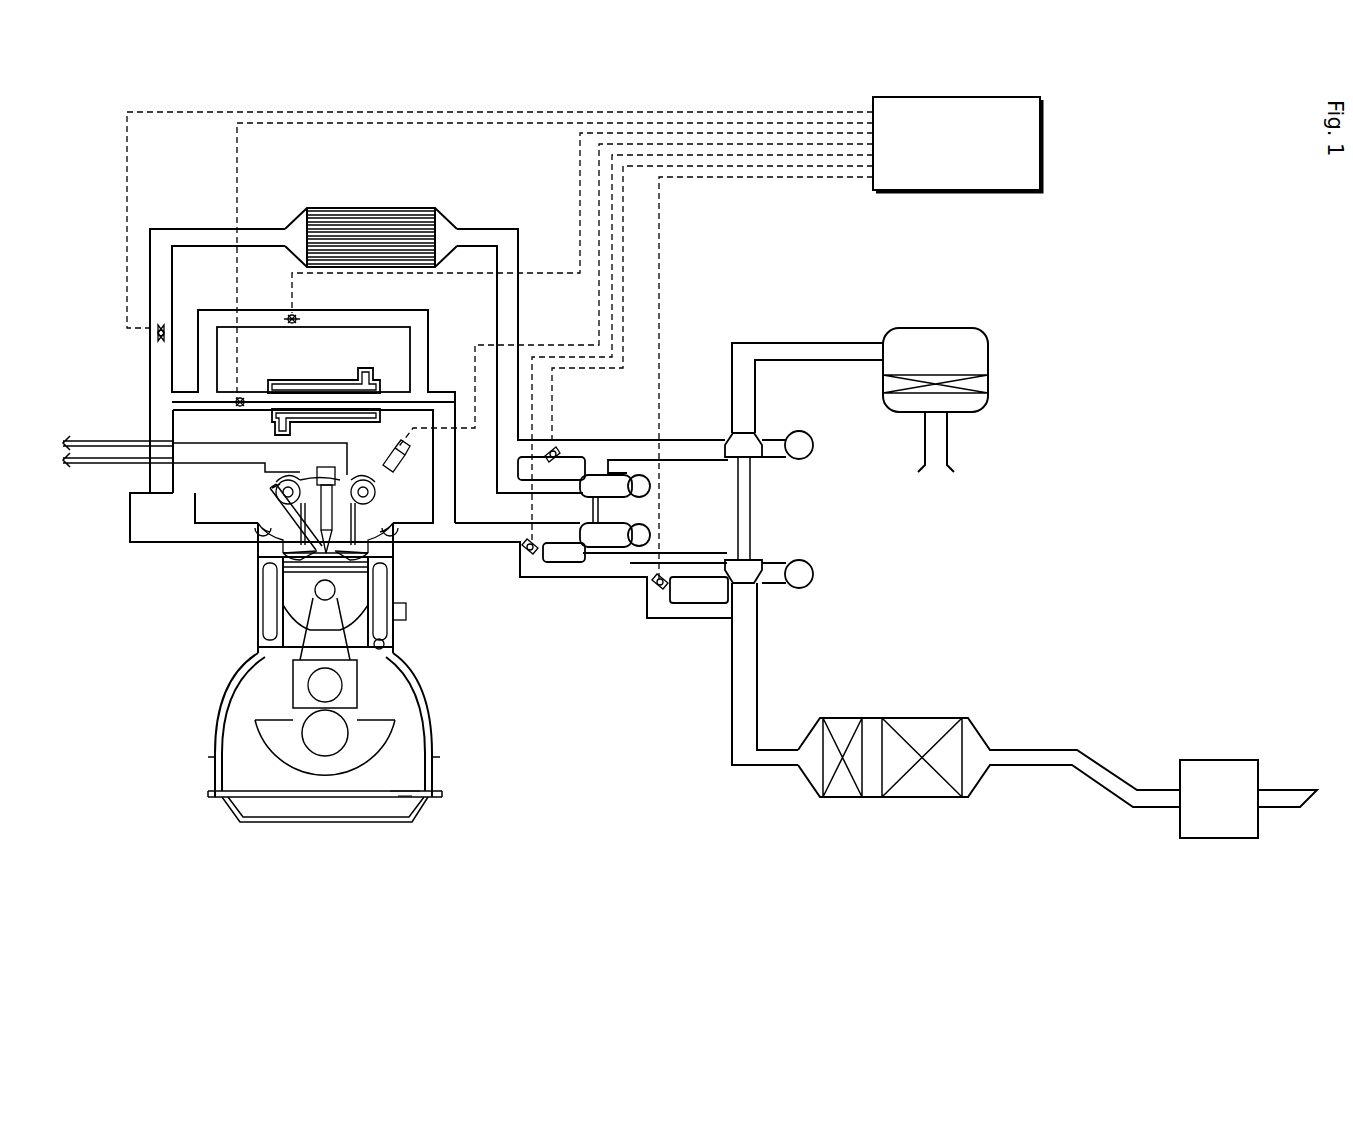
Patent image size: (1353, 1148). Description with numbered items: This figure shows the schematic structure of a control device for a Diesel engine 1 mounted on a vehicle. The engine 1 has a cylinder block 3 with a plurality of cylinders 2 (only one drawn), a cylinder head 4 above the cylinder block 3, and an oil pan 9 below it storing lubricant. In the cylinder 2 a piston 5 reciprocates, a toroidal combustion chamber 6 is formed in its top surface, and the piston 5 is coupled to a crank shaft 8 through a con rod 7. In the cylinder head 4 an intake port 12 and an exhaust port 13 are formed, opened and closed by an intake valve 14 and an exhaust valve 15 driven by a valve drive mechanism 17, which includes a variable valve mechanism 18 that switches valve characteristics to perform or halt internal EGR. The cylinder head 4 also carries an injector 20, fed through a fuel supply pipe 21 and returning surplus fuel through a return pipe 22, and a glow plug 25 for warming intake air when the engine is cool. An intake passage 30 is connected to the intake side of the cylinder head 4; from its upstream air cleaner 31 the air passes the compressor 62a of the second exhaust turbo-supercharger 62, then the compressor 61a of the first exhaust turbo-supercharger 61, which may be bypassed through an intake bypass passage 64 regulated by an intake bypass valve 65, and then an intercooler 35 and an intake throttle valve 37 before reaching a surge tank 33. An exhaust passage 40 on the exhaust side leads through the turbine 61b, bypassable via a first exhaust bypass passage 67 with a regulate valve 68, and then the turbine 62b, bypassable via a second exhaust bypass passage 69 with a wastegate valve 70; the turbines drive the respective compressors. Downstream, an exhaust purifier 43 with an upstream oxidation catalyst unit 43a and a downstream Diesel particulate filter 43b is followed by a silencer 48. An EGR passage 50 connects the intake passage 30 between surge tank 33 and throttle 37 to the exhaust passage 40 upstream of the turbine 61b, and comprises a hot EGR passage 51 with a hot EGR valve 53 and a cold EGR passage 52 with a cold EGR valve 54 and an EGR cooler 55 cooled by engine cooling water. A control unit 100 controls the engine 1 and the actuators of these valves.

The engine 1 is at (212, 598).
The cylinder 2 is at (360, 657).
The cylinder block 3 is at (256, 625).
The cylinder head 4 is at (317, 488).
The piston 5 is at (283, 590).
The combustion chamber 6 is at (350, 565).
The con rod 7 is at (262, 650).
The crank shaft 8 is at (348, 735).
The oil pan 9 is at (315, 825).
The intake port 12 is at (280, 535).
The exhaust port 13 is at (395, 521).
The intake valve 14 is at (282, 548).
The exhaust valve 15 is at (378, 545).
The valve drive mechanism 17 is at (300, 480).
The variable valve mechanism 18 is at (400, 455).
The injector 20 is at (316, 484).
The fuel supply pipe 21 is at (80, 466).
The return pipe 22 is at (80, 440).
The glow plug 25 is at (280, 500).
The intake passage 30 is at (521, 258).
The air cleaner 31 is at (952, 375).
The surge tank 33 is at (150, 544).
The intercooler 35 is at (345, 207).
The intake throttle valve 37 is at (152, 338).
The exhaust passage 40 is at (731, 713).
The exhaust purifier 43 is at (989, 808).
The oxidation catalyst unit 43a is at (842, 797).
The Diesel particulate filter 43b is at (922, 789).
The silencer 48 is at (1219, 760).
The EGR passage 50 is at (313, 360).
The hot EGR passage 51 is at (350, 330).
The cold EGR passage 52 is at (345, 382).
The hot EGR valve 53 is at (300, 316).
The cold EGR valve 54 is at (228, 402).
The EGR cooler 55 is at (268, 413).
The first exhaust turbo-supercharger 61 is at (628, 466).
The compressor of first exhaust turbo-supercharger 61a is at (630, 493).
The turbine of first exhaust turbo-supercharger 61b is at (630, 527).
The second exhaust turbo-supercharger 62 is at (788, 509).
The compressor of second exhaust turbo-supercharger 62a is at (752, 457).
The turbine of second exhaust turbo-supercharger 62b is at (752, 560).
The intake bypass passage 64 is at (590, 440).
The intake bypass valve 65 is at (556, 445).
The first exhaust bypass passage 67 is at (570, 565).
The regulate valve 68 is at (527, 562).
The second exhaust bypass passage 69 is at (706, 605).
The wastegate valve 70 is at (655, 598).
The control unit 100 is at (1042, 142).